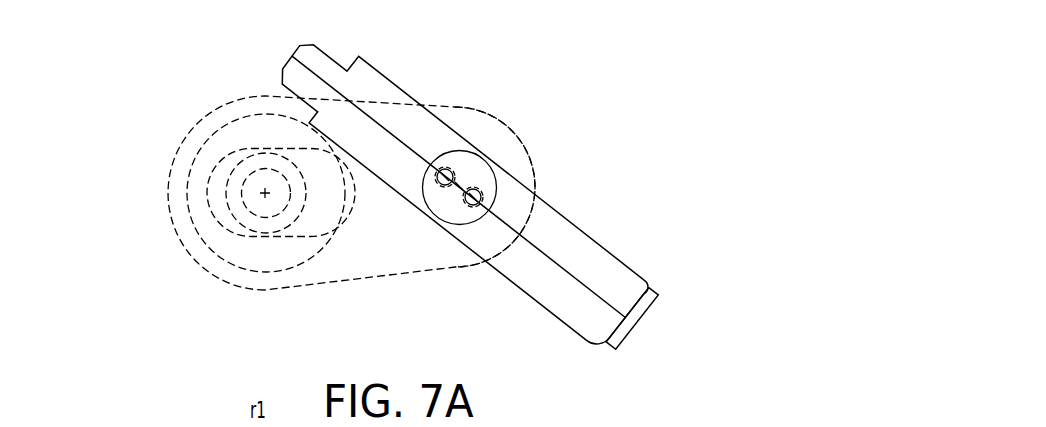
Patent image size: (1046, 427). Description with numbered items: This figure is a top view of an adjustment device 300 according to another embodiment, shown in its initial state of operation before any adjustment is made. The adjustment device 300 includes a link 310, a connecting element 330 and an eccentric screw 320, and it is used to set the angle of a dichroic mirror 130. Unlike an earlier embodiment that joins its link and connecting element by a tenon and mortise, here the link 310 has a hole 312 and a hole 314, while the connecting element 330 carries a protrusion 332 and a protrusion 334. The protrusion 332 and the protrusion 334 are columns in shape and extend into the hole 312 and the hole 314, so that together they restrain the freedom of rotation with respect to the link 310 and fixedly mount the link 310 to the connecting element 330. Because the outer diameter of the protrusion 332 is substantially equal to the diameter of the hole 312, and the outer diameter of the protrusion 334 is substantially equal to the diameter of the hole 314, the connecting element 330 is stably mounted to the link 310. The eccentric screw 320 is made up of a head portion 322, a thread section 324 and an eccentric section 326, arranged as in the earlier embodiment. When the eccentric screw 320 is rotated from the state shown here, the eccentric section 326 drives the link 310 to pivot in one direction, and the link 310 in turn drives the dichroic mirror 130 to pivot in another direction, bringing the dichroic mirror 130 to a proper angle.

The dichroic mirror 130 is at (666, 302).
The adjustment device 300 is at (394, 205).
The link 310 is at (392, 207).
The hole 312 is at (536, 187).
The hole 314 is at (464, 132).
The eccentric screw 320 is at (281, 250).
The head portion 322 is at (266, 229).
The thread section 324 is at (271, 248).
The eccentric section 326 is at (290, 246).
The connecting element 330 is at (491, 184).
The protrusion 332 is at (504, 115).
The protrusion 334 is at (453, 141).